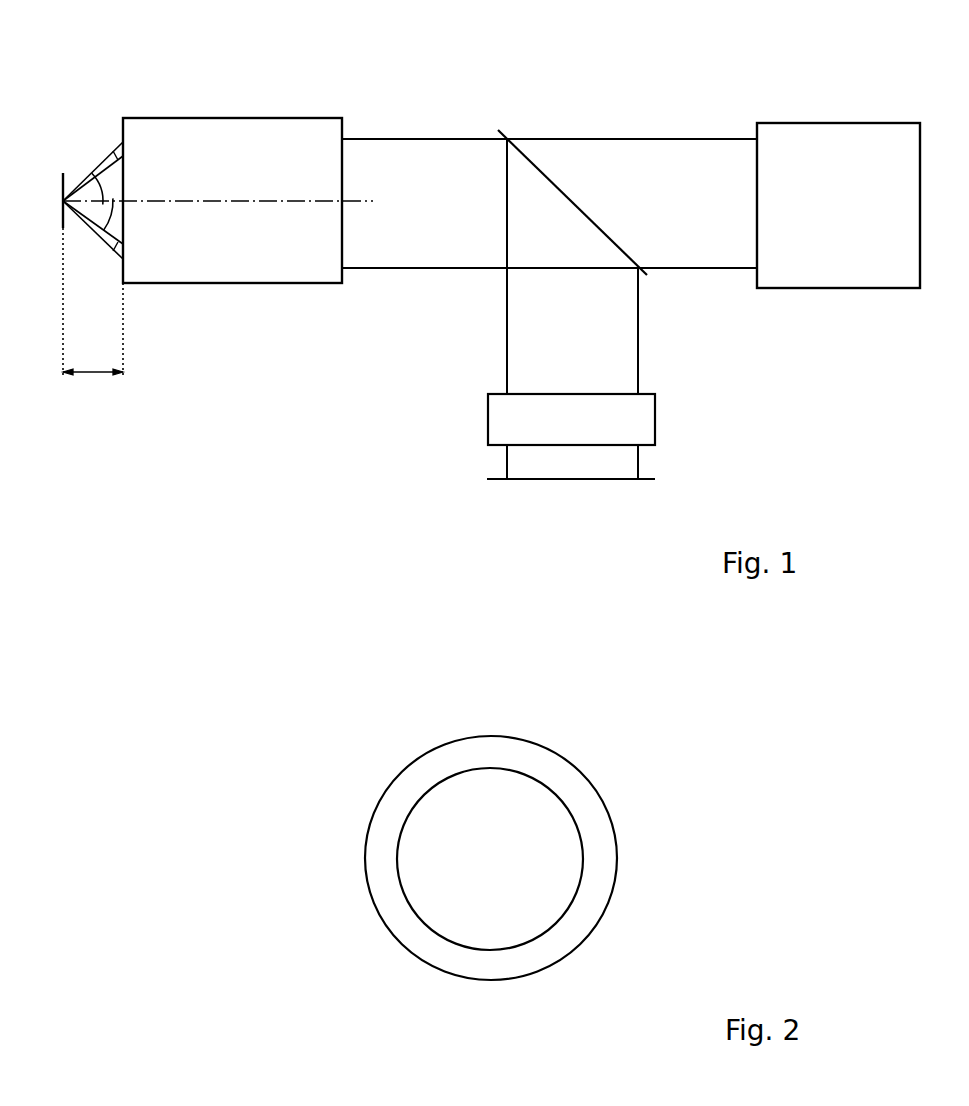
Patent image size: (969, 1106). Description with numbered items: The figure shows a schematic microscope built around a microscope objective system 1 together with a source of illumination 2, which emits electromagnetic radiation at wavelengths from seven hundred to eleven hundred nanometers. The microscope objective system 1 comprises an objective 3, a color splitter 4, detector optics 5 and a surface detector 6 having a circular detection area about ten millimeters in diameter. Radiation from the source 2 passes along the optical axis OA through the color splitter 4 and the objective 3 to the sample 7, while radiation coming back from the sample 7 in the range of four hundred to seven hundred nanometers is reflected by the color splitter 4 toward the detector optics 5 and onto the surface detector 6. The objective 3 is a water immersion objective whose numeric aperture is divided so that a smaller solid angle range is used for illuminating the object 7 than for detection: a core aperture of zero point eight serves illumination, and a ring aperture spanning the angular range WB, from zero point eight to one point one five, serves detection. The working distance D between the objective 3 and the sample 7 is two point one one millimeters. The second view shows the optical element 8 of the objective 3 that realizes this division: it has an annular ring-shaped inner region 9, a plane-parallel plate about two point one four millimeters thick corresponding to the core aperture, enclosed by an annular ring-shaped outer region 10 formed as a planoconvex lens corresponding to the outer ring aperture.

In FIG. 1, the microscope objective system 1 is at (352, 373).
In FIG. 1, the source of illumination 2 is at (907, 288).
In FIG. 1, the objective 3 is at (310, 283).
In FIG. 1, the color splitter 4 is at (620, 252).
In FIG. 1, the detector optics 5 is at (488, 445).
In FIG. 1, the surface detector 6 is at (568, 479).
In FIG. 1, the sample 7 is at (72, 227).
In FIG. 2, the optical element 8 is at (433, 898).
In FIG. 2, the inner region 9 is at (388, 932).
In FIG. 2, the outer region 10 is at (525, 978).
In FIG. 1, the optical axis OA is at (371, 195).
In FIG. 1, the angular range WB is at (110, 157).
In FIG. 1, the working distance D is at (93, 322).